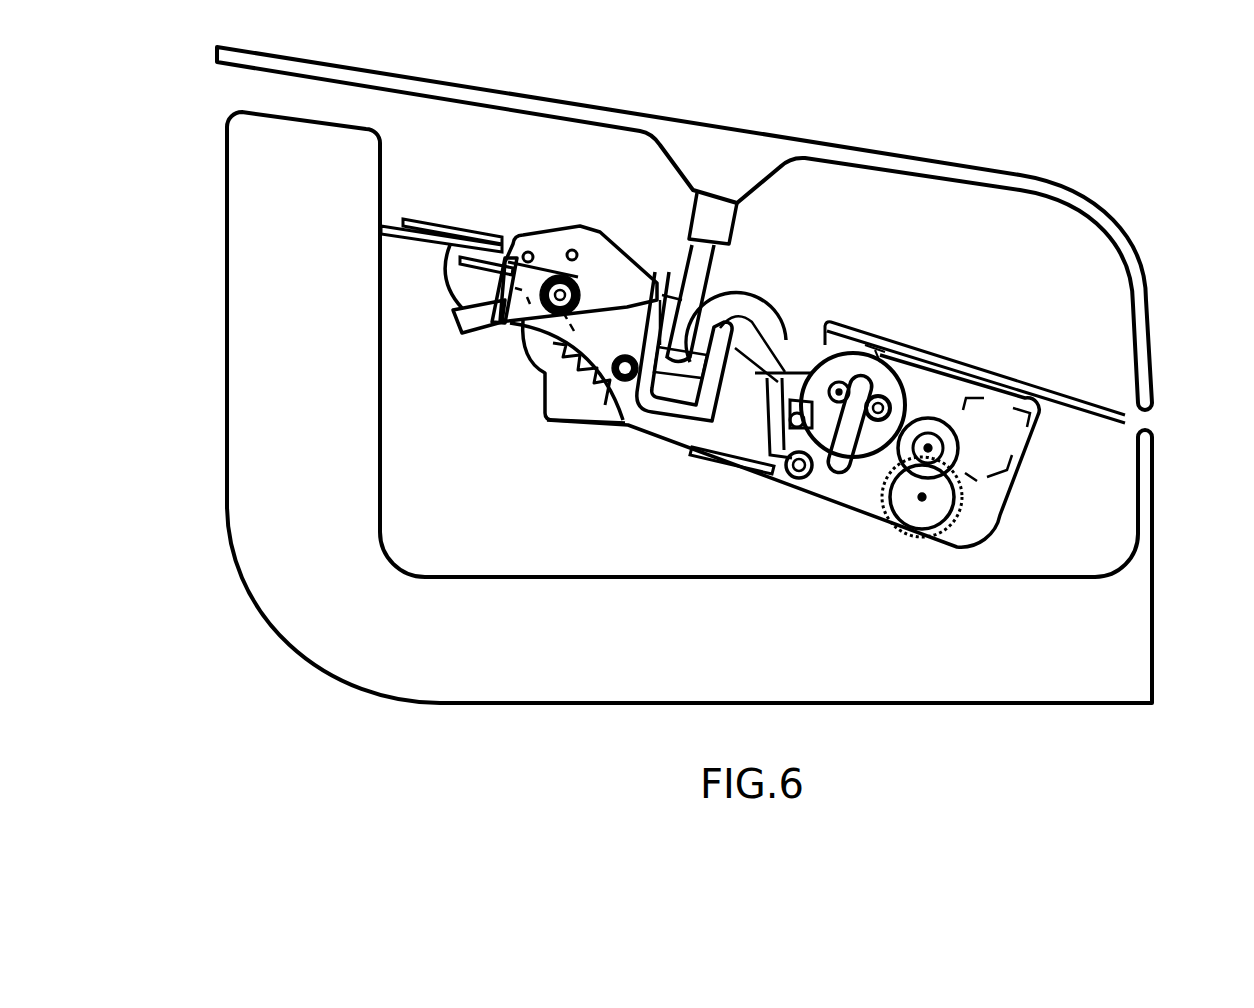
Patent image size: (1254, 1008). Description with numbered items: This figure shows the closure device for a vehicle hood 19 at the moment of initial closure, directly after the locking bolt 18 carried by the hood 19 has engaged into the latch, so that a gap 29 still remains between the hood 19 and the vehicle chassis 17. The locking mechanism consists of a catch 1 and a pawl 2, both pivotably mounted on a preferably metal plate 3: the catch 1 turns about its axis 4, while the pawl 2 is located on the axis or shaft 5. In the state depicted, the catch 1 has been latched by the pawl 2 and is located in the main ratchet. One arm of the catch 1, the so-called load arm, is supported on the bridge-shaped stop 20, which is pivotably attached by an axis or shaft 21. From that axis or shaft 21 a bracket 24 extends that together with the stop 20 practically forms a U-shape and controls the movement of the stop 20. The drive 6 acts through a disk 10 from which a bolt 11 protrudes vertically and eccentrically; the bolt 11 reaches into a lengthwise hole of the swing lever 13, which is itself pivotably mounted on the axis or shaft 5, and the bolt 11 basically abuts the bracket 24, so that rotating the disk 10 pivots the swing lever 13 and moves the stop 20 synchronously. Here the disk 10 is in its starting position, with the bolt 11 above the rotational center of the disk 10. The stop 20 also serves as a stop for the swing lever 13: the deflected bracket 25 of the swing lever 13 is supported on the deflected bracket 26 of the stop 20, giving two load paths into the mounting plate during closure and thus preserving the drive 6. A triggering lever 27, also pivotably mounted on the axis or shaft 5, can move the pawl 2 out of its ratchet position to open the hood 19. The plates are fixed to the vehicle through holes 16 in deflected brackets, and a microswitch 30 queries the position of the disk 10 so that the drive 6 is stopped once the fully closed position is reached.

The catch 1 is at (735, 305).
The pawl 2 is at (533, 322).
The plate 3 is at (675, 425).
The axis 4 is at (625, 382).
The axis or shaft 5 is at (554, 287).
The drive 6 is at (1012, 538).
The disk 10 is at (871, 445).
The bolt 11 is at (838, 387).
The swing lever 13 is at (577, 236).
The holes 16 is at (757, 340).
The vehicle chassis 17 is at (1030, 388).
The locking bolt 18 is at (688, 287).
The hood 19 is at (1055, 183).
The bridge-shaped stop 20 is at (792, 430).
The axis or shaft 21 is at (797, 480).
The bracket 24 is at (927, 433).
The deflected bracket 25 is at (797, 378).
The deflected bracket 26 is at (830, 440).
The triggering lever 27 is at (460, 330).
The gap 29 is at (1142, 433).
The microswitch 30 is at (893, 345).